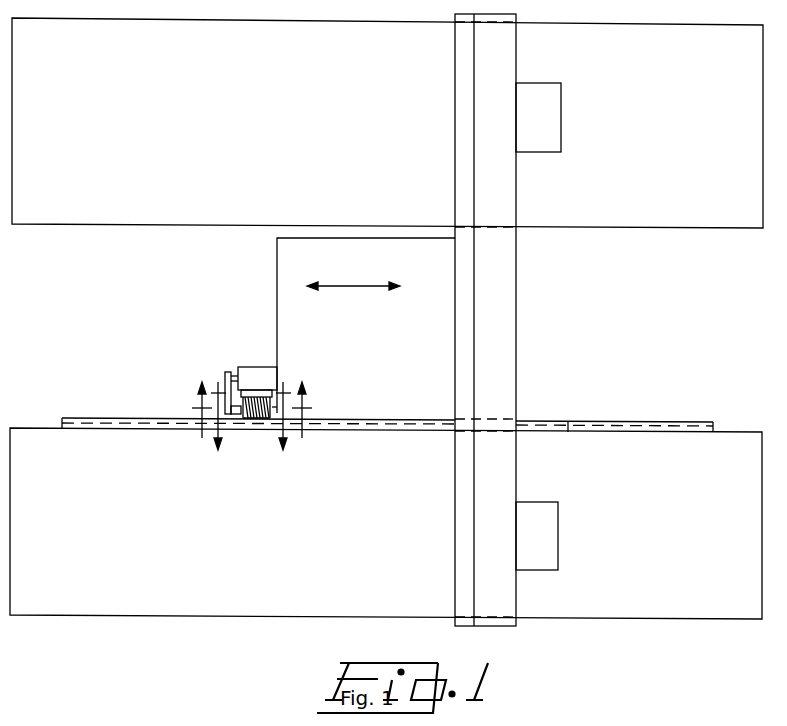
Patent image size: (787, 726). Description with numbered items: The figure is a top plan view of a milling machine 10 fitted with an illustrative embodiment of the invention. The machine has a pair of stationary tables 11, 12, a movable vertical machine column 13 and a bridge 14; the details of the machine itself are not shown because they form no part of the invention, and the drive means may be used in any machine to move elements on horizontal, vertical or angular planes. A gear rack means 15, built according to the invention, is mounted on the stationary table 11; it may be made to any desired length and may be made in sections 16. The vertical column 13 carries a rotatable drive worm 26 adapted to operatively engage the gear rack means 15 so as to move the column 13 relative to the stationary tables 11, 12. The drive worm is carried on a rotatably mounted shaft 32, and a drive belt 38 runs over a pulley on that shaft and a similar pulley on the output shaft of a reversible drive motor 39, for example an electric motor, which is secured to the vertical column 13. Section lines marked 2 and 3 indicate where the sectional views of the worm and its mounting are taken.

The milling machine 10 is at (386, 540).
The stationary table 11 is at (80, 599).
The stationary table 12 is at (117, 217).
The movable vertical machine column 13 is at (285, 300).
The bridge 14 is at (504, 203).
The gear rack means 15 is at (64, 412).
The sections 16 is at (112, 427).
The drive worm 26 is at (258, 421).
The shaft 32 is at (238, 419).
The drive belt 38 is at (227, 372).
The reversible drive motor 39 is at (265, 366).
The section line 2- 2 is at (252, 398).
The section line 3- 3 is at (251, 435).